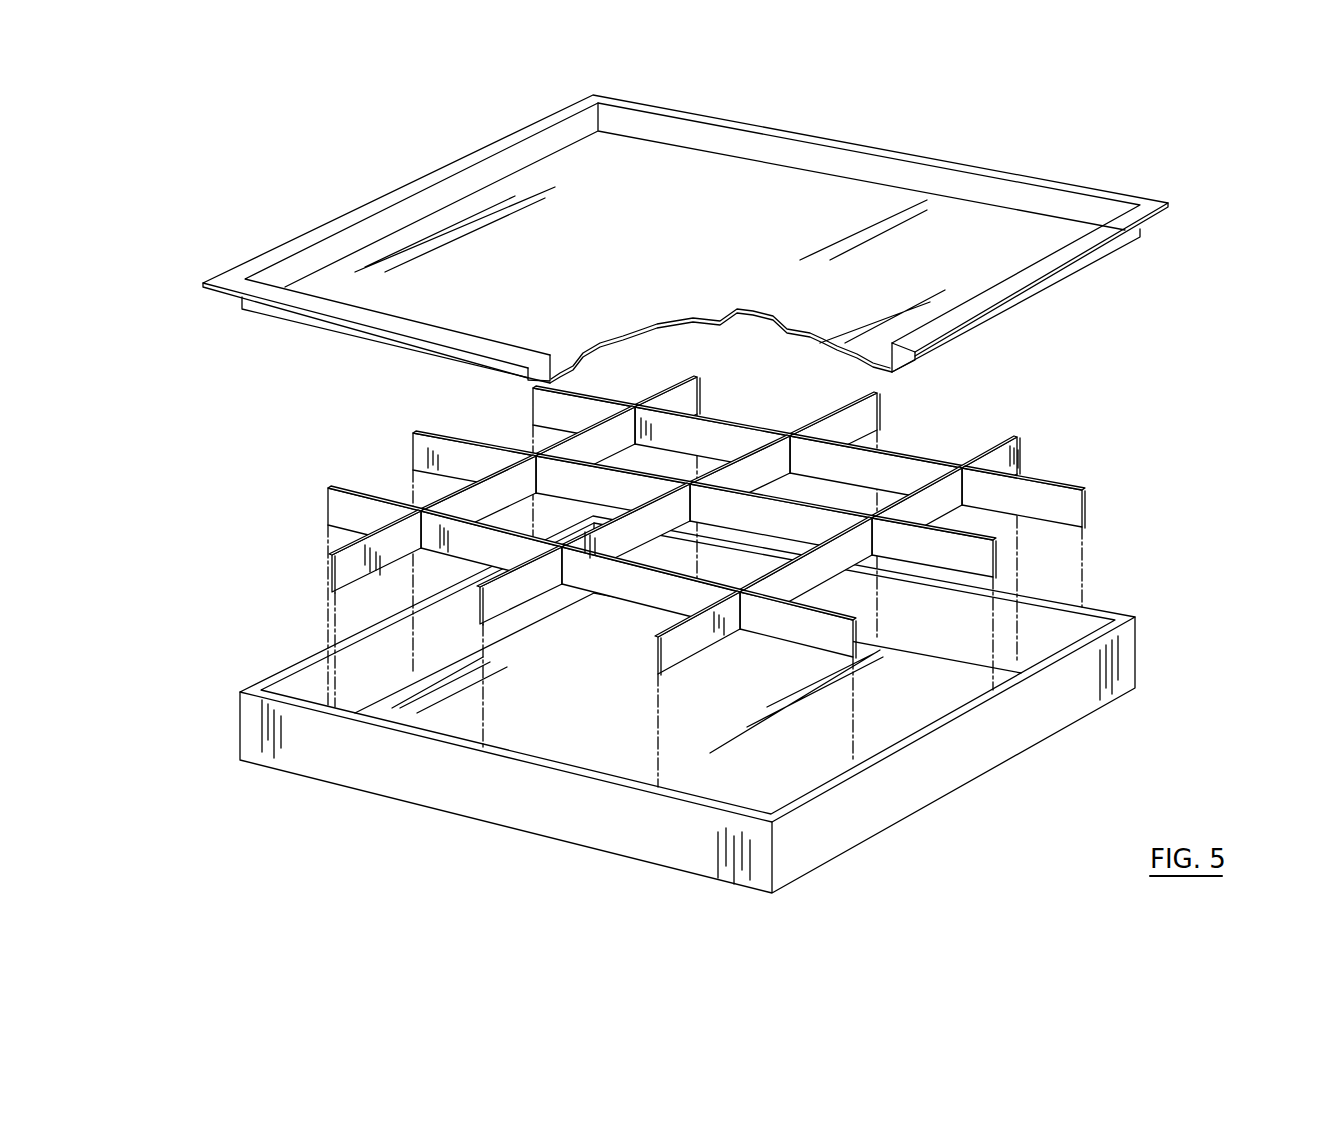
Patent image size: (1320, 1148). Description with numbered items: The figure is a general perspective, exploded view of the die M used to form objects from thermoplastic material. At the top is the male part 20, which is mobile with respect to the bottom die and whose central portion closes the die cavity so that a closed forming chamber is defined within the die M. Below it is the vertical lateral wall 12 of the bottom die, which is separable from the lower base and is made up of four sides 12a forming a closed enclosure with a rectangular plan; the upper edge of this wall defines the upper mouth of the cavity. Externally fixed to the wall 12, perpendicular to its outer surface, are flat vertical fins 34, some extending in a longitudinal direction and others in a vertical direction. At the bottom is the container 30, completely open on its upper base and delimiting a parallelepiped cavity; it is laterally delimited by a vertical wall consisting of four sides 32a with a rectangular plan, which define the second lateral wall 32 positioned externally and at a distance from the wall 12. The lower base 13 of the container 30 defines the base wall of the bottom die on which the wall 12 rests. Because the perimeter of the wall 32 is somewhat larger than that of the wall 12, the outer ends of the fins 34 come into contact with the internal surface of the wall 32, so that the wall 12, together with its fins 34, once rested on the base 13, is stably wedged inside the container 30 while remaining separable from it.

The male part 20 is at (1120, 252).
The container 30 is at (745, 704).
The second lateral wall 32 is at (745, 704).
The sides 32a is at (313, 680).
The lateral wall 12 is at (699, 538).
The sides 12a is at (530, 453).
The flat vertical fins 34 is at (333, 500).
The lower base 13 is at (747, 777).
The die M is at (243, 500).